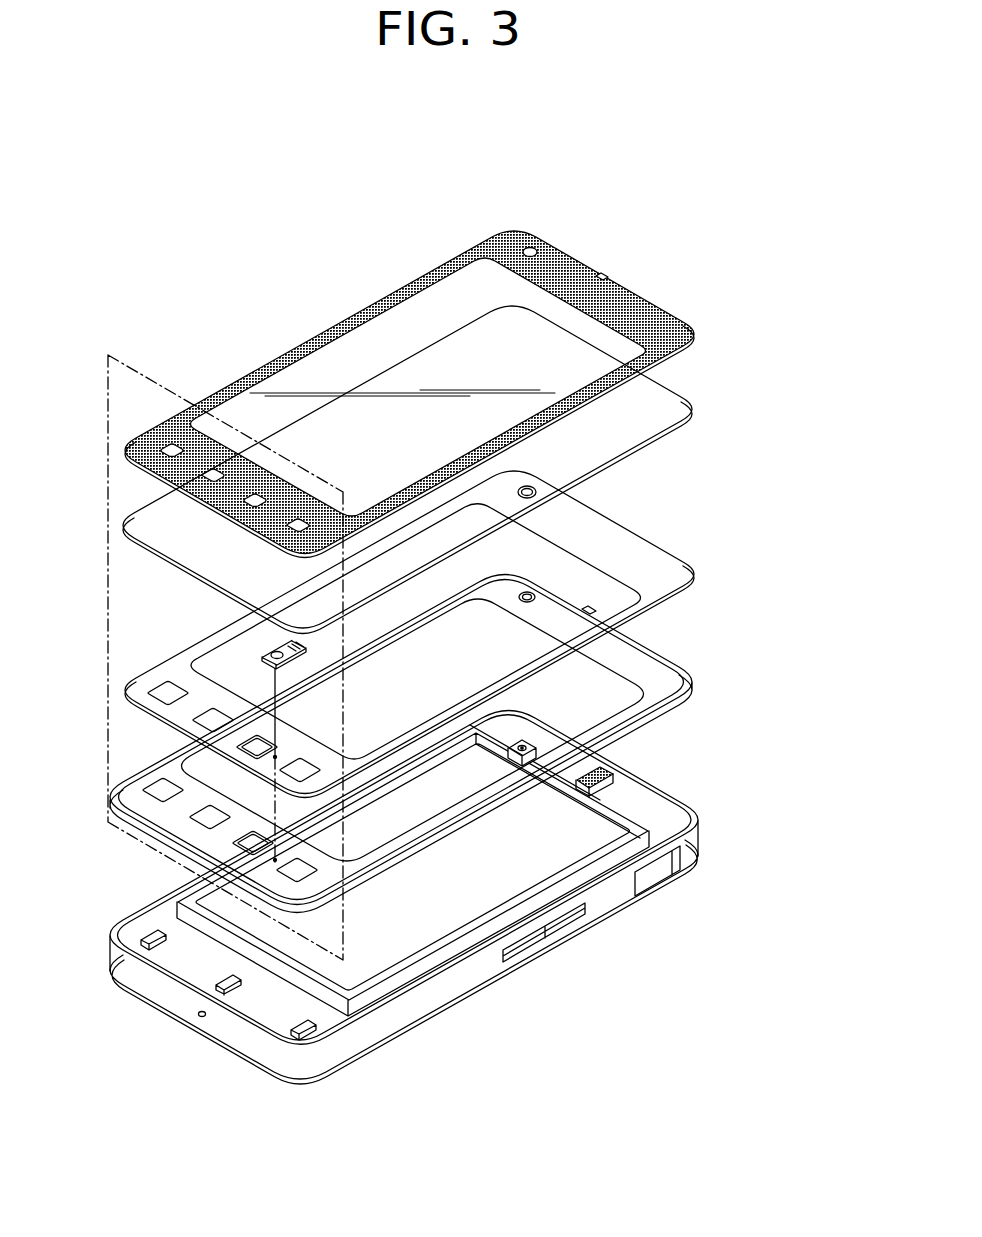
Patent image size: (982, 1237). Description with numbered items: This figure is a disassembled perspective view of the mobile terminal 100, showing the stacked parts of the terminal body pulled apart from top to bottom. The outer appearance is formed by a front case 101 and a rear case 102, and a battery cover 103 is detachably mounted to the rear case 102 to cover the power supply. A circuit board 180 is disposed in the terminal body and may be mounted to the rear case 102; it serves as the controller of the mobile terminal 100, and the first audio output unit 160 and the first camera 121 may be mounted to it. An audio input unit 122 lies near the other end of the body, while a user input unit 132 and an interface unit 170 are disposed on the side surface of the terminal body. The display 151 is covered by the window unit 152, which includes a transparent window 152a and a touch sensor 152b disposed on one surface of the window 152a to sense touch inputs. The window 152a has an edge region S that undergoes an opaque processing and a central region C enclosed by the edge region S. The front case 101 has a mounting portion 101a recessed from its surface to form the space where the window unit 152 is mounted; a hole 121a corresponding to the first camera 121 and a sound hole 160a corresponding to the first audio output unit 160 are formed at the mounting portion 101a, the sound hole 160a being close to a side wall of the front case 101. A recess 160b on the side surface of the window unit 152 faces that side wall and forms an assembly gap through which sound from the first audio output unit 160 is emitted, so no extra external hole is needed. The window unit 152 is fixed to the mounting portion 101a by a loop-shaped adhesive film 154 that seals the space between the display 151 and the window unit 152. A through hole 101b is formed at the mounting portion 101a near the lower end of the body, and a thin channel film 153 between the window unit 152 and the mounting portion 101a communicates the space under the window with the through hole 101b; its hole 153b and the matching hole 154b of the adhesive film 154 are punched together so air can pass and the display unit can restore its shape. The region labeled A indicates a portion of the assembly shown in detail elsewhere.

The mobile terminal 100 is at (260, 329).
The front case 101 is at (426, 703).
The mounting portion 101a is at (667, 665).
The through hole 101b is at (273, 860).
The rear case 102 is at (437, 887).
The battery cover 103 is at (690, 873).
The first camera 121 is at (530, 742).
The hole 121a is at (535, 594).
The audio input unit 122 is at (199, 1016).
The user input unit 132 is at (528, 944).
The display 151 is at (427, 943).
The window unit 152 is at (467, 415).
The window 152a is at (447, 393).
The touch sensor 152b is at (690, 408).
The channel film 153 is at (217, 726).
The hole 153b is at (205, 640).
The adhesive film 154 is at (363, 666).
The hole 154b is at (275, 757).
The first audio output unit 160 is at (602, 774).
The sound hole 160a is at (590, 612).
The recess 160b is at (605, 277).
The interface unit 170 is at (654, 879).
The circuit board 180 is at (660, 814).
The edge region S is at (447, 377).
The central region C is at (380, 316).
The portion A is at (145, 372).